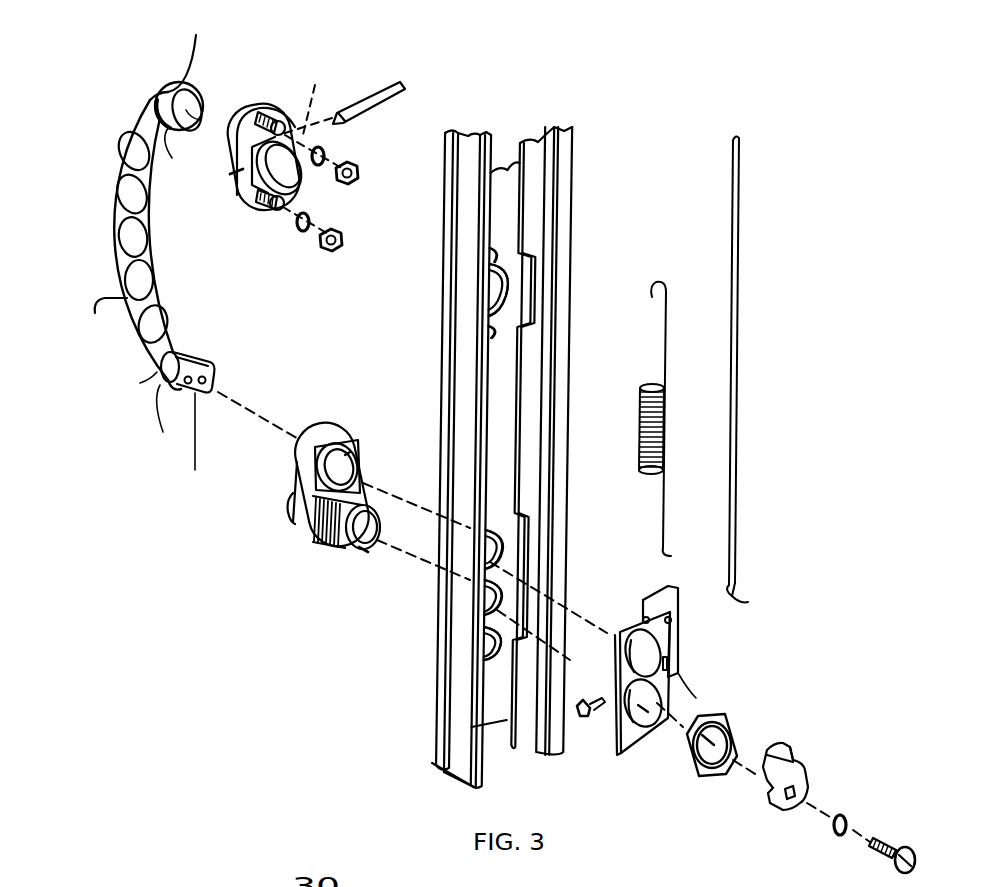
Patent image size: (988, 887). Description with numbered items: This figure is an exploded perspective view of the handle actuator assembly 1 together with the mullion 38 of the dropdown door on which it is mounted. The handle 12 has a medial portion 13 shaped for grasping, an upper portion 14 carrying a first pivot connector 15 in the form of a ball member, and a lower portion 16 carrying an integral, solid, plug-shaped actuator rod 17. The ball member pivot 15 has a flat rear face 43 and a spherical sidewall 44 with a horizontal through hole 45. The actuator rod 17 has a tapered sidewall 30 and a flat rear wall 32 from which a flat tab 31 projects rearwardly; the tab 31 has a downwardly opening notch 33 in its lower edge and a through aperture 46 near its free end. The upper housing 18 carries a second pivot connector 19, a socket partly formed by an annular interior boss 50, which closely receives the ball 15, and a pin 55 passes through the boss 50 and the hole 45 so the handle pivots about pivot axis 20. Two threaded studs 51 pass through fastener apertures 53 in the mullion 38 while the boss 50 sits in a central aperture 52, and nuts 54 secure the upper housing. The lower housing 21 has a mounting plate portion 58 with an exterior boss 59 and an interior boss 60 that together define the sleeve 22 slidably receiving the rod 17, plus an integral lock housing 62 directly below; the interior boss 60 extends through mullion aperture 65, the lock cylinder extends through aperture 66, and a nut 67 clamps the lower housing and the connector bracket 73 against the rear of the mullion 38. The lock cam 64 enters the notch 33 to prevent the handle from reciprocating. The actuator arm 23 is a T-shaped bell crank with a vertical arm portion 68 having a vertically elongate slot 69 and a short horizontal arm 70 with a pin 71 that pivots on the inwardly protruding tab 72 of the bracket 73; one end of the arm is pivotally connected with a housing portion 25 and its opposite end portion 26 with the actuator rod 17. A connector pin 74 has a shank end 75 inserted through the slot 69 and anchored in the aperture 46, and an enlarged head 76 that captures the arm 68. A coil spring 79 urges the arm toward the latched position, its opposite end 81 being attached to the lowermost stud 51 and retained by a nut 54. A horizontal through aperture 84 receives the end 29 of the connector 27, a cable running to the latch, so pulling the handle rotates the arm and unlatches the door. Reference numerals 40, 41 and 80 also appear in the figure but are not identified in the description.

The handle actuator assembly 1 is at (117, 68).
The handle 12 is at (142, 118).
The medial portion 13 is at (118, 231).
The upper portion 14 is at (160, 90).
The first pivot connector 15 is at (196, 88).
The lower portion 16 is at (140, 383).
The actuator rod 17 is at (190, 360).
The upper housing 18 is at (280, 105).
The second pivot connector 19 is at (292, 174).
The pivot axis 20 is at (315, 107).
The lower housing 21 is at (310, 535).
The sleeve 22 is at (360, 477).
The actuator arm 23 is at (680, 632).
The housing portion 25 is at (572, 138).
The opposite end portion 26 is at (678, 677).
The connector 27 is at (742, 165).
The opposite end 29 is at (748, 602).
The tapered sidewall 30 is at (140, 419).
The tab 31 is at (216, 370).
The flat rear wall 32 is at (177, 446).
The notch 33 is at (193, 386).
The mullion 38 is at (442, 352).
The aperture 40 is at (143, 280).
The aperture 41 is at (150, 212).
The flat rear face 43 is at (200, 120).
The spherical sidewall 44 is at (160, 172).
The through hole 45 is at (172, 158).
The through aperture 46 is at (233, 404).
The interior boss 50 is at (258, 200).
The threaded studs 51 is at (275, 215).
The central aperture 52 is at (506, 292).
The fastener apertures 53 is at (493, 252).
The nuts 54 is at (356, 165).
The pin 55 is at (383, 85).
The mounting plate portion 58 is at (350, 430).
The exterior boss 59 is at (292, 507).
The interior boss 60 is at (358, 455).
The lock housing 62 is at (340, 557).
The lock cam 64 is at (805, 767).
The aperture 65 is at (497, 543).
The aperture 66 is at (480, 650).
The nut 67 is at (700, 770).
The vertical arm portion 68 is at (680, 665).
The vertically elongate slot 69 is at (699, 692).
The short horizontal arm 70 is at (643, 612).
The pin 71 is at (650, 615).
The tab 72 is at (652, 600).
The connector bracket 73 is at (618, 760).
The connector pin 74 is at (592, 702).
The shank end 75 is at (600, 715).
The enlarged head 76 is at (588, 720).
The coil spring 79 is at (641, 395).
The spring hook 80 is at (687, 552).
The opposite end 81 is at (671, 293).
The horizontal through aperture 84 is at (728, 592).